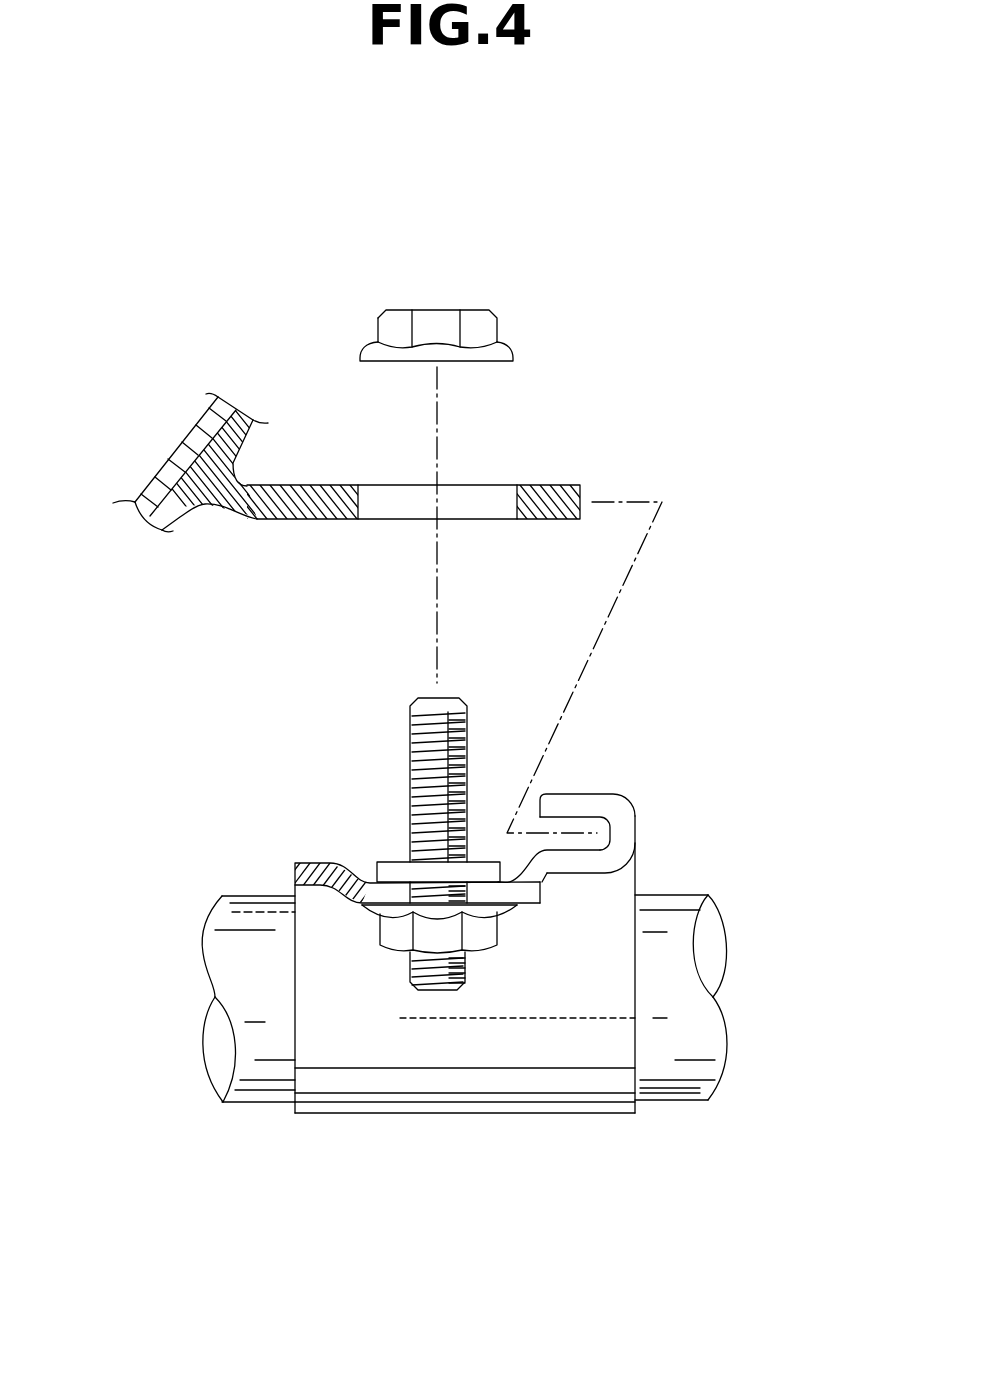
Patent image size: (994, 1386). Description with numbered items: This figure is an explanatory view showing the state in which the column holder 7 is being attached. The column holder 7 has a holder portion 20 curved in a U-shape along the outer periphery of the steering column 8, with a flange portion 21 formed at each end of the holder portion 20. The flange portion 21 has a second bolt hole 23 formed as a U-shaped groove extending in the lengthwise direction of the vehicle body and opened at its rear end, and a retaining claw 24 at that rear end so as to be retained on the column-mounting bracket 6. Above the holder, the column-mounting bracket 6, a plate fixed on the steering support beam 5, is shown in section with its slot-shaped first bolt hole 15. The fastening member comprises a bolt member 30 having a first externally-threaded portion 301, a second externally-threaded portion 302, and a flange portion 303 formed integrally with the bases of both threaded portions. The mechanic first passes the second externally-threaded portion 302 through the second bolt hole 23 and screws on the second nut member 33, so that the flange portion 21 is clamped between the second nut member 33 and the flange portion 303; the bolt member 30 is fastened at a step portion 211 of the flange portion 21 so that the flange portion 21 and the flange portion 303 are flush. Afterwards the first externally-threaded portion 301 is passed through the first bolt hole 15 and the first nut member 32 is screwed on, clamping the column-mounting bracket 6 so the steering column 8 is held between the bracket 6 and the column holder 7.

The steering support beam 5 is at (190, 462).
The column-mounting bracket 6 is at (300, 513).
The first bolt hole 15 is at (487, 503).
The first nut member 32 is at (497, 332).
The bolt member 30 is at (359, 954).
The first externally-threaded portion 301 is at (435, 742).
The flange portion 303 is at (392, 868).
The second externally-threaded portion 302 is at (440, 970).
The second nut member 33 is at (383, 952).
The column holder 7 is at (534, 1022).
The steering column 8 is at (693, 1040).
The holder portion 20 is at (560, 1090).
The flange portion 21 is at (583, 867).
The step portion 211 is at (545, 880).
The second bolt hole 23 is at (525, 893).
The retaining claw 24 is at (622, 828).